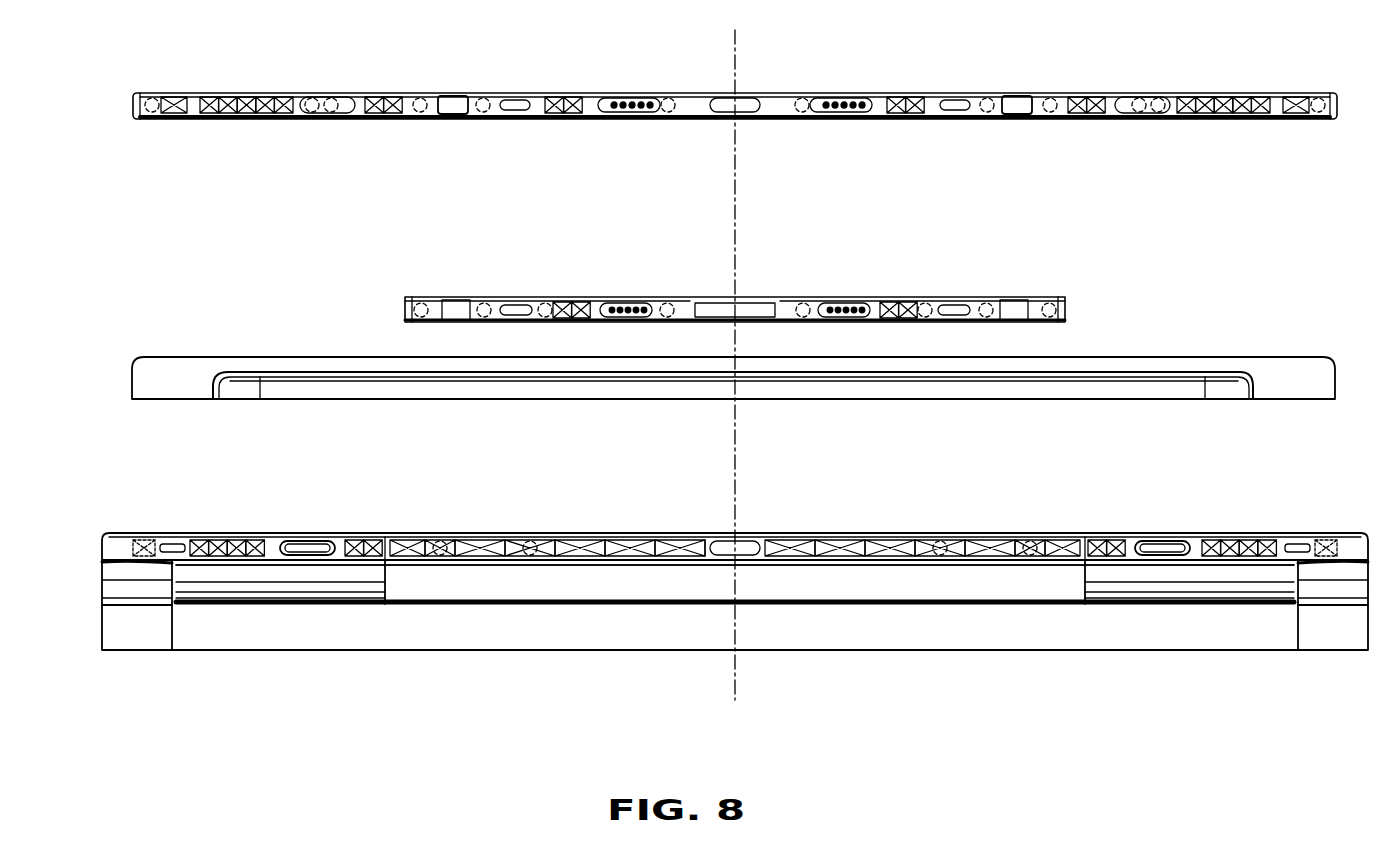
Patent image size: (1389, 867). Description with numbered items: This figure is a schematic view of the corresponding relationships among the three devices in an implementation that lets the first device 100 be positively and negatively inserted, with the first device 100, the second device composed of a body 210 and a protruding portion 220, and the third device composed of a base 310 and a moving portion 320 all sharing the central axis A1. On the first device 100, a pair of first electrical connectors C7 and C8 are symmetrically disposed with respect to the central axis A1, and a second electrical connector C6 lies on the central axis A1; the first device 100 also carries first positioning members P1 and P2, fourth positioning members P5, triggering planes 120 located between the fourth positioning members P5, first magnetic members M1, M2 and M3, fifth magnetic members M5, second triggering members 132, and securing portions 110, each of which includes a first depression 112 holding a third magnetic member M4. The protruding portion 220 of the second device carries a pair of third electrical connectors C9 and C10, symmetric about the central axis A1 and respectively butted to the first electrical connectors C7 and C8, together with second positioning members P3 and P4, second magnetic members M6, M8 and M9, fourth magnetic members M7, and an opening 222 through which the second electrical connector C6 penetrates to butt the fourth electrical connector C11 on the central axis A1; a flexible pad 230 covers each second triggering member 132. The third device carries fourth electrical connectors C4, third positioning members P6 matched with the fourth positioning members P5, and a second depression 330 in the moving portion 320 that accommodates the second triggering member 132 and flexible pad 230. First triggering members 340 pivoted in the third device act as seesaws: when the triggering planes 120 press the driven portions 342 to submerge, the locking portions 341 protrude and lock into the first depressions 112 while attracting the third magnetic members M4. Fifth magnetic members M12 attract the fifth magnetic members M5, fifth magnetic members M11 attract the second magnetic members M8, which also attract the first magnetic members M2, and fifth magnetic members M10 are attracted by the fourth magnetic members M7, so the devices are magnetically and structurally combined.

The first device 100 is at (133, 106).
The triggering plane 120 is at (190, 95).
The fourth positioning member P5 is at (248, 96).
The securing portion 110 is at (313, 96).
The first depression 112 is at (300, 116).
The second triggering member 132 is at (452, 95).
The first positioning member P1 is at (513, 99).
The first positioning member P2 is at (572, 96).
The first electrical connector C7 is at (632, 97).
The second electrical connector C6 is at (722, 97).
The first electrical connector C8 is at (838, 97).
The fifth magnetic member M5 is at (152, 113).
The third magnetic member M4 is at (333, 114).
The first magnetic member M3 is at (420, 114).
The first magnetic member M2 is at (483, 114).
The first magnetic member M1 is at (668, 114).
The flexible pad 230 is at (456, 302).
The second positioning member P3 is at (516, 304).
The second positioning member P4 is at (570, 302).
The third electrical connector C9 is at (626, 302).
The opening 222 is at (718, 296).
The third electrical connector C10 is at (842, 302).
The second magnetic member M9 is at (421, 318).
The second magnetic member M8 is at (484, 318).
The fourth magnetic member M7 is at (545, 318).
The second magnetic member M6 is at (667, 318).
The protruding portion 220 is at (1062, 323).
The body 210 is at (130, 382).
The first triggering member 340 is at (275, 470).
The driven portion 342 is at (166, 540).
The locking portion 341 is at (292, 540).
The fourth electrical connector C4 is at (366, 540).
The second depression 330 is at (442, 540).
The fourth electrical connector C11 is at (722, 540).
The fifth magnetic member M12 is at (140, 548).
The moving portion 320 is at (128, 535).
The base 310 is at (122, 634).
The third positioning member P6 is at (220, 566).
The fifth magnetic member M11 is at (440, 556).
The fifth magnetic member M10 is at (530, 556).
The central axis A1 is at (736, 386).